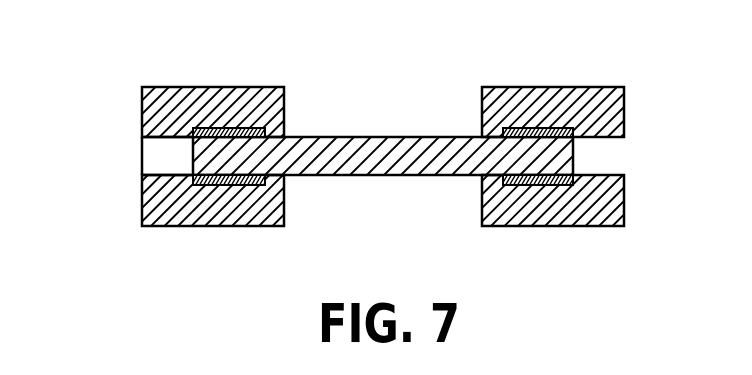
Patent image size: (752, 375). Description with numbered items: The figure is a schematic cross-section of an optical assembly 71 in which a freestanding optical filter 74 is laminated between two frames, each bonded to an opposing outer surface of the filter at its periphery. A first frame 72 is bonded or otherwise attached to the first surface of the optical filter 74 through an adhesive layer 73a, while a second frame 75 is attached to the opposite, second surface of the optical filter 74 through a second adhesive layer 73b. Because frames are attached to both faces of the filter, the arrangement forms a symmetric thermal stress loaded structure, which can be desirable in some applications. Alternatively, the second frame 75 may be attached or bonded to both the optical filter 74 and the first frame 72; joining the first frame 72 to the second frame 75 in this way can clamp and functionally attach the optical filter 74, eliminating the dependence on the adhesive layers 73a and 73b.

The optical assembly 71 is at (142, 158).
The first frame 72 is at (225, 228).
The adhesive layer 73a is at (551, 186).
The second adhesive layer 73b is at (552, 128).
The optical filter 74 is at (386, 137).
The second frame 75 is at (225, 87).